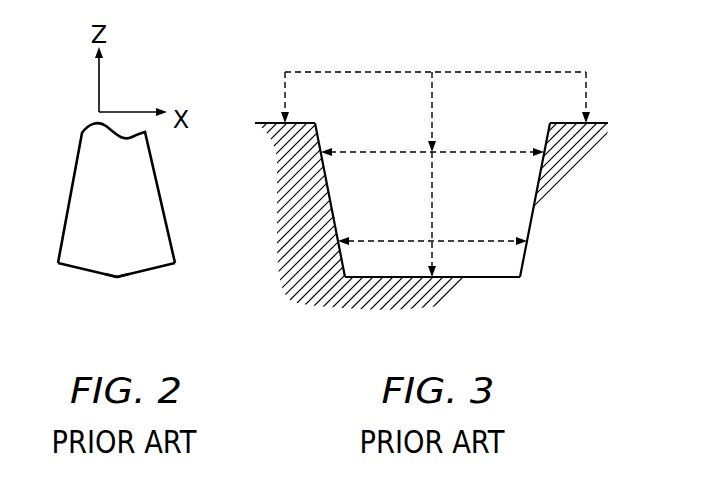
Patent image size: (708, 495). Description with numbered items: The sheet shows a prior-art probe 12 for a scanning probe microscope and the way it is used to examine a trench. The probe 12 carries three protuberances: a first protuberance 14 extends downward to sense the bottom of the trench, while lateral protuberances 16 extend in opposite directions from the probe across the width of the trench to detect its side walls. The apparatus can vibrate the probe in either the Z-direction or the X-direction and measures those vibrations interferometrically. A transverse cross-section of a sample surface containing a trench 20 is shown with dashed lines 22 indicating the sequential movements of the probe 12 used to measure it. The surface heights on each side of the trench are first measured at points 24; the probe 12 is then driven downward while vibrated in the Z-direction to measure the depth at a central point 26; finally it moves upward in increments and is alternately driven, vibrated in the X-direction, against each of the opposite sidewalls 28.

In FIG. 2, the probe 12 is at (70, 199).
In FIG. 2, the first protuberance 14 is at (117, 277).
In FIG. 2, the lateral protuberances 16 is at (188, 293).
In FIG. 3, the trench 20 is at (327, 179).
In FIG. 3, the dashed lines 22 is at (430, 116).
In FIG. 3, the points 24 is at (272, 122).
In FIG. 3, the central point 26 is at (440, 276).
In FIG. 3, the sidewalls 28 is at (538, 182).